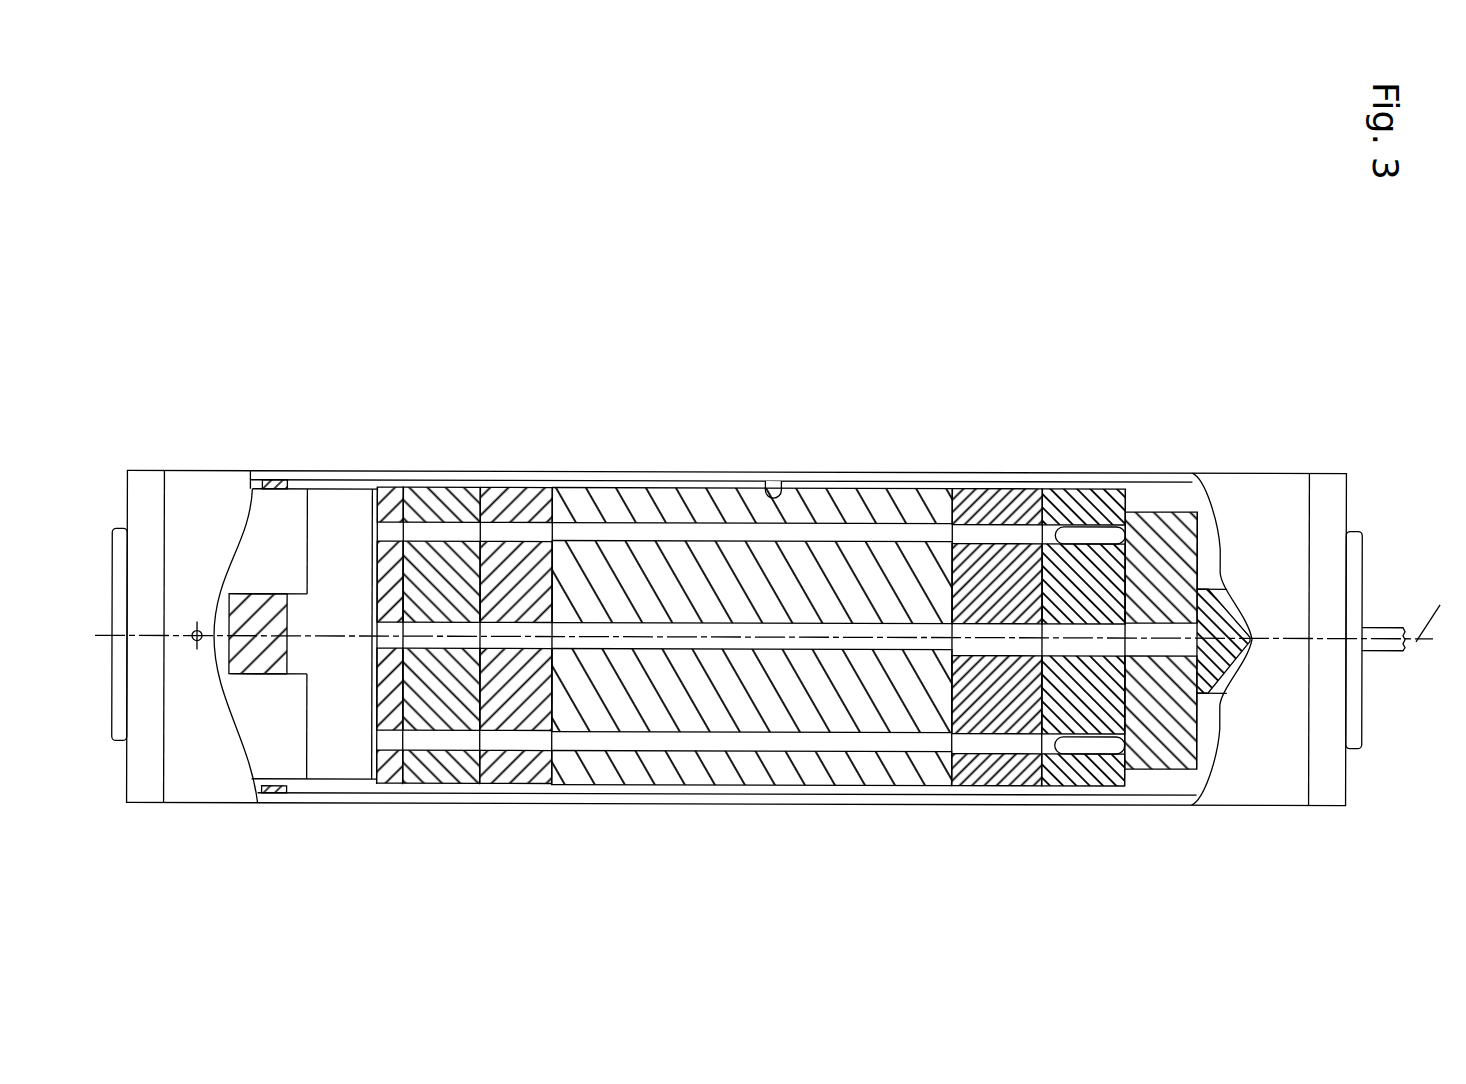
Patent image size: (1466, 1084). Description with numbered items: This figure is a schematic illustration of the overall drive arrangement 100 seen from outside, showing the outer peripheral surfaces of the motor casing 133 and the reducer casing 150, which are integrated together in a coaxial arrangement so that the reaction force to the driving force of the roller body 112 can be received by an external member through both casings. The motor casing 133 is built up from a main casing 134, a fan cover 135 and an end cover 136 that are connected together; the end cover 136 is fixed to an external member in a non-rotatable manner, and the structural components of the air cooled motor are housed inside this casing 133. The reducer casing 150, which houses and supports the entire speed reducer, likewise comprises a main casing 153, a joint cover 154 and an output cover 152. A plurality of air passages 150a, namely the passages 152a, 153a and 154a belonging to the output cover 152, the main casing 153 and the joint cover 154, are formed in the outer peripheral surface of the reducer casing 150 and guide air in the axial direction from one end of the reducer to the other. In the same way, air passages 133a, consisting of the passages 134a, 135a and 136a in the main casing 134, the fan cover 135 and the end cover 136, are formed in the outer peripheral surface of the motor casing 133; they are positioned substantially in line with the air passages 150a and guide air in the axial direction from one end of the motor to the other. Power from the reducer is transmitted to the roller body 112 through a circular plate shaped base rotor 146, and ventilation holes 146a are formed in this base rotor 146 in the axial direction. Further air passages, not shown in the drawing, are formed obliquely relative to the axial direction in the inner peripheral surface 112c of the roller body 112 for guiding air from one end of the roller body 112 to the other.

The motor 100 is at (702, 258).
The roller body 112 is at (692, 473).
The inner peripheral surface of the roller body 112c is at (785, 480).
The motor casing 133 is at (1117, 312).
The main casing 134 is at (868, 485).
The fan cover 135 is at (988, 485).
The end cover 136 is at (1080, 485).
The air passages 133a is at (1102, 868).
The air passages 134a is at (902, 782).
The air passages 135a is at (992, 780).
The air passages 136a is at (1080, 775).
The base rotor 146 is at (268, 468).
The ventilation holes 146a is at (253, 658).
The reducer casing 150 is at (547, 323).
The output cover 152 is at (388, 485).
The main casing 153 is at (443, 485).
The joint cover 154 is at (502, 485).
The air passages 150a is at (560, 857).
The air passages 152a is at (387, 773).
The air passages 153a is at (452, 775).
The air passages 154a is at (527, 772).